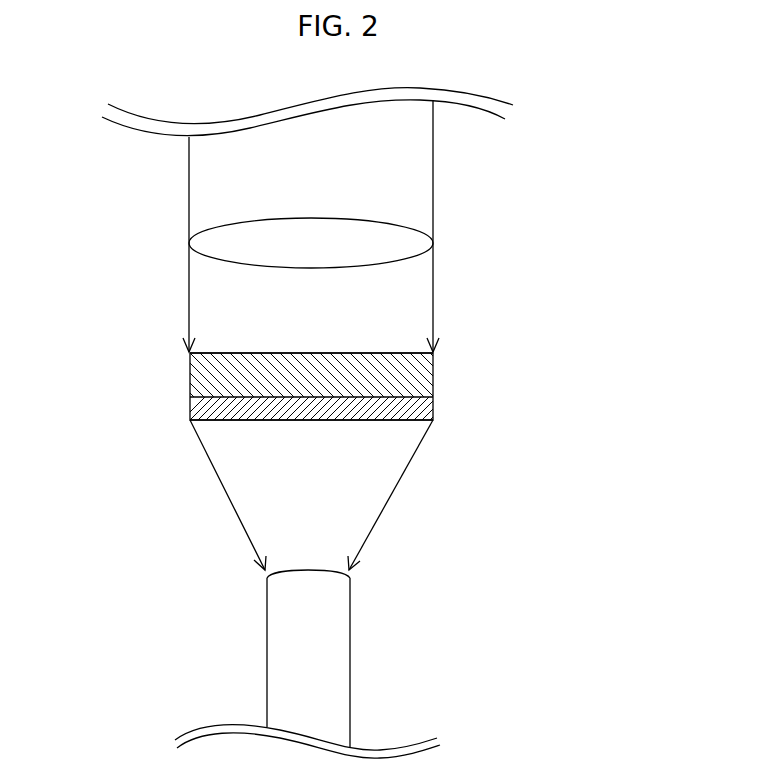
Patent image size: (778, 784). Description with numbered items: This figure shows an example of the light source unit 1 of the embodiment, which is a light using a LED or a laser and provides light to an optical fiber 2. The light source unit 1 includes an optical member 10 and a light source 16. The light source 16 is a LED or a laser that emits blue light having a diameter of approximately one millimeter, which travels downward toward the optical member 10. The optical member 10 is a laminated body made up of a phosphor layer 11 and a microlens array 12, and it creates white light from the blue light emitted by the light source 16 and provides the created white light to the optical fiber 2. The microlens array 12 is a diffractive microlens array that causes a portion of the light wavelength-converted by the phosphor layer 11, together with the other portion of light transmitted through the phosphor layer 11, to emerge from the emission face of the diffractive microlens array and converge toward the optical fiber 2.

The light source unit 1 is at (618, 252).
The optical fiber 2 is at (277, 628).
The optical member 10 is at (110, 375).
The phosphor layer 11 is at (197, 366).
The microlens array 12 is at (197, 407).
The light source 16 is at (420, 181).